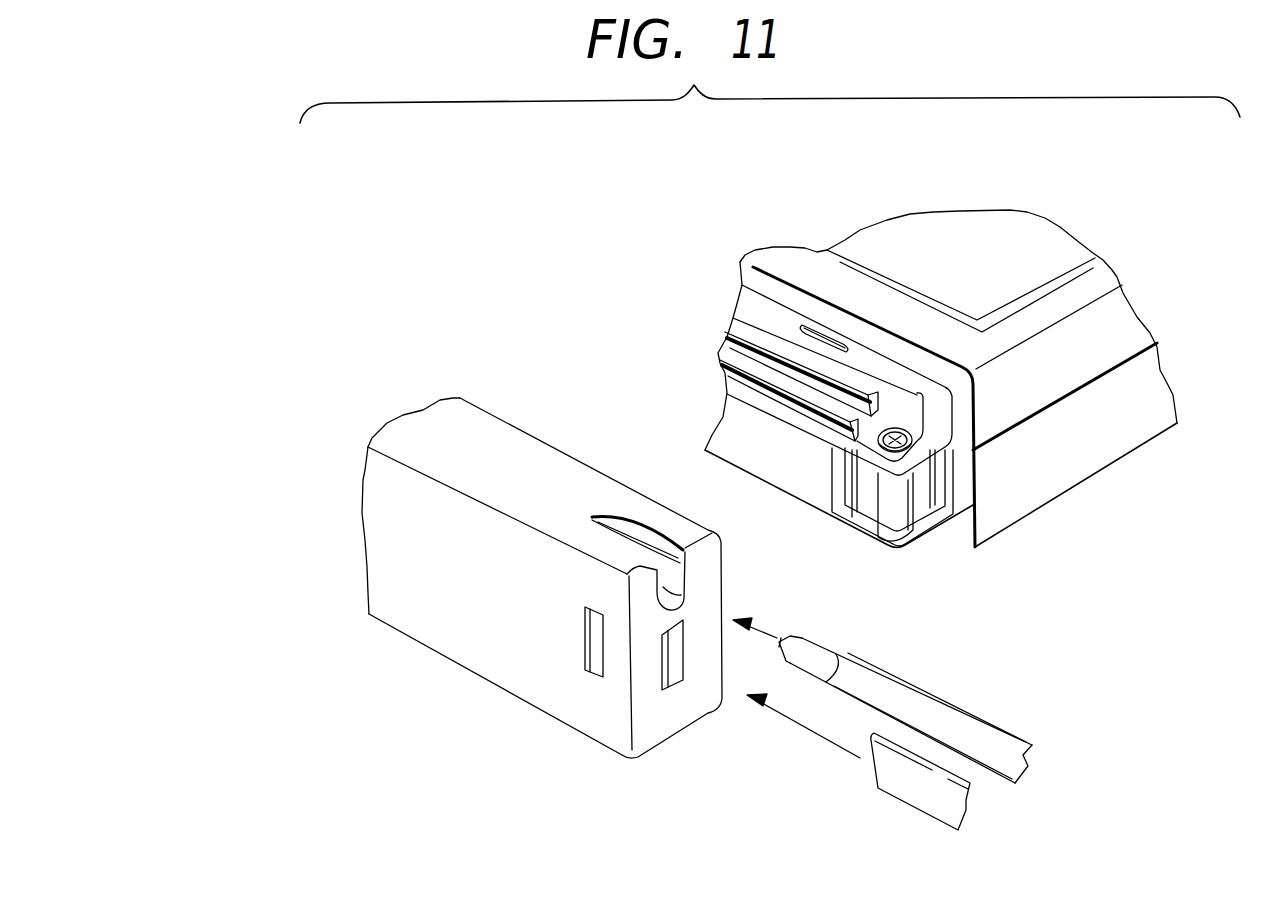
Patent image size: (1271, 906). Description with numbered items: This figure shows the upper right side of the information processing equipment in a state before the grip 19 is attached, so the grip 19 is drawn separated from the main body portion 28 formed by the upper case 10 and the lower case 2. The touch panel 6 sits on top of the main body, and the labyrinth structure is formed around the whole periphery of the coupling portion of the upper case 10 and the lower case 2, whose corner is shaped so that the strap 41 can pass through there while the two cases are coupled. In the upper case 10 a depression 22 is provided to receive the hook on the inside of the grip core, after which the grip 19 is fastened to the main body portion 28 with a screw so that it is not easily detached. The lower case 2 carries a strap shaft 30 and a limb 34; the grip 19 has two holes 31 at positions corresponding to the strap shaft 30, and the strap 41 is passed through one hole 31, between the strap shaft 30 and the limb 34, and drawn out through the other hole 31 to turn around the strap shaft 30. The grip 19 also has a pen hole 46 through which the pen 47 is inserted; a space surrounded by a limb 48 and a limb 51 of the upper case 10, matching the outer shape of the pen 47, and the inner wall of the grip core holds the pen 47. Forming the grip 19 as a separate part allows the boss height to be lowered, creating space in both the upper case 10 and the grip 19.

The lower case 2 is at (740, 428).
The touch panel 6 is at (1018, 250).
The upper case 10 is at (1083, 340).
The grip 19 is at (443, 619).
The depression 22 is at (822, 330).
The main body portion 28 is at (1080, 507).
The strap shaft 30 is at (897, 513).
The holes 31 is at (593, 650).
The limb 34 is at (930, 492).
The strap 41 is at (905, 785).
The pen hole 46 is at (683, 598).
The pen 47 is at (983, 732).
The limb 48 is at (758, 340).
The limb 51 is at (832, 418).